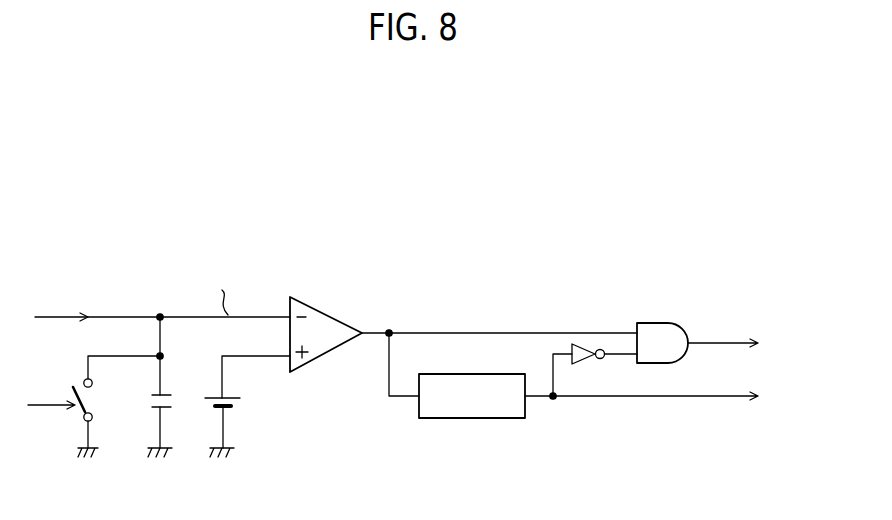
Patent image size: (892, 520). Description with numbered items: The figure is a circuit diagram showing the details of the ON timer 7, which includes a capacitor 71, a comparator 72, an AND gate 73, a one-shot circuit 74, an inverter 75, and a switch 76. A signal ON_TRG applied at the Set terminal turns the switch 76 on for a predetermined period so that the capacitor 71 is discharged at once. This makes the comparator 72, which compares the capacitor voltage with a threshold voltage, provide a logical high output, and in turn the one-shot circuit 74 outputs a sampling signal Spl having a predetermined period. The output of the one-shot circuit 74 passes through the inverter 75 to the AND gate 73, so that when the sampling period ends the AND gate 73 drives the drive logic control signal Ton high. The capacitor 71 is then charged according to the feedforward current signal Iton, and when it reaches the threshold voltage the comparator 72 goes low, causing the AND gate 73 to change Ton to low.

The ON timer 7 is at (136, 201).
The capacitor 71 is at (150, 400).
The comparator 72 is at (323, 312).
The AND gate 73 is at (659, 322).
The one-shot circuit 74 is at (467, 422).
The inverter 75 is at (583, 332).
The switch 76 is at (70, 400).